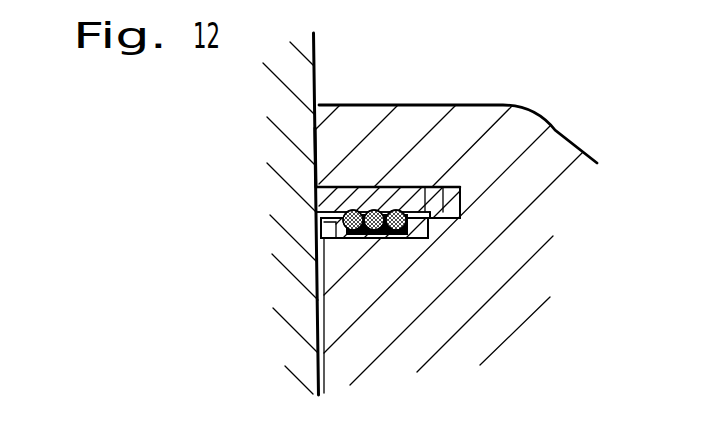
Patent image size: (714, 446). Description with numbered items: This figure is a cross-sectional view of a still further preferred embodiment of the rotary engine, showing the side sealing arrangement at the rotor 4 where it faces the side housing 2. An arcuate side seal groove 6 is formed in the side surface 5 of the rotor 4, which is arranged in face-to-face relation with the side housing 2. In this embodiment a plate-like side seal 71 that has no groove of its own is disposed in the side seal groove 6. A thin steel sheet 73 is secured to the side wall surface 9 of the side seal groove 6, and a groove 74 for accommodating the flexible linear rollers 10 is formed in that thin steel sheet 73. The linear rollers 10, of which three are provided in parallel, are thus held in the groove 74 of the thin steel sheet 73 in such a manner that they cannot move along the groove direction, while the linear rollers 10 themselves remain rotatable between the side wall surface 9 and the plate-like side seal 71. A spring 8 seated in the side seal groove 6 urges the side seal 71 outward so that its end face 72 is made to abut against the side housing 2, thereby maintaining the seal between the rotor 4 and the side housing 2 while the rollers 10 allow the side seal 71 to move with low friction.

The side housing 2 is at (287, 112).
The rotor 4 is at (474, 120).
The side surface 5 is at (313, 148).
The side seal groove 6 is at (414, 190).
The spring 8 is at (470, 203).
The side wall surface 9 is at (352, 238).
The flexible linear roller 10 is at (400, 208).
The plate-like side seal 71 is at (313, 202).
The end face 72 is at (332, 215).
The thin steel sheet 73 is at (322, 219).
The groove 74 is at (410, 237).